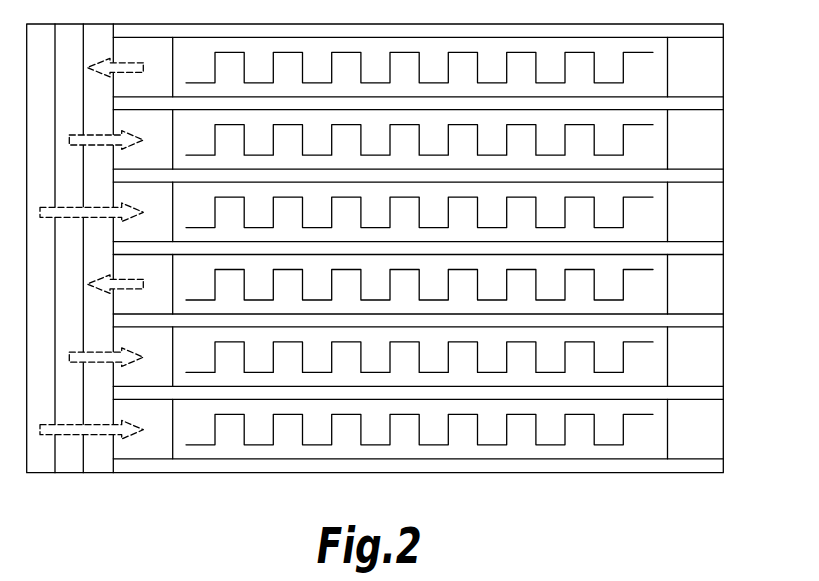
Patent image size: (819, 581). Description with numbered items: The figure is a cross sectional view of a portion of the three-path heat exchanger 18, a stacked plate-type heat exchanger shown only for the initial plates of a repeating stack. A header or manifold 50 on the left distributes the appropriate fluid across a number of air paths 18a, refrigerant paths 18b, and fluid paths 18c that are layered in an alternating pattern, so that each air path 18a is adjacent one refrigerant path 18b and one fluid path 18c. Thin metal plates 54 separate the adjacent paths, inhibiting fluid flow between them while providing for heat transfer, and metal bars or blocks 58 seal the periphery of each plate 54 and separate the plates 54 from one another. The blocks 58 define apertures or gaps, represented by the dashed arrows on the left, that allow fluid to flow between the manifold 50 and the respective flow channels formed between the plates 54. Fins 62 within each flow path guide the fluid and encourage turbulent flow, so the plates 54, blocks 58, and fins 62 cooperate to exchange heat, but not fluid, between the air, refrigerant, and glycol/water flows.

The three-path heat exchanger 18 is at (607, 473).
The air path 18a is at (147, 163).
The refrigerant path 18b is at (118, 236).
The fluid path 18c is at (132, 199).
The manifold 50 is at (27, 480).
The plates 54 is at (232, 320).
The blocks 58 is at (157, 287).
The fins 62 is at (488, 372).